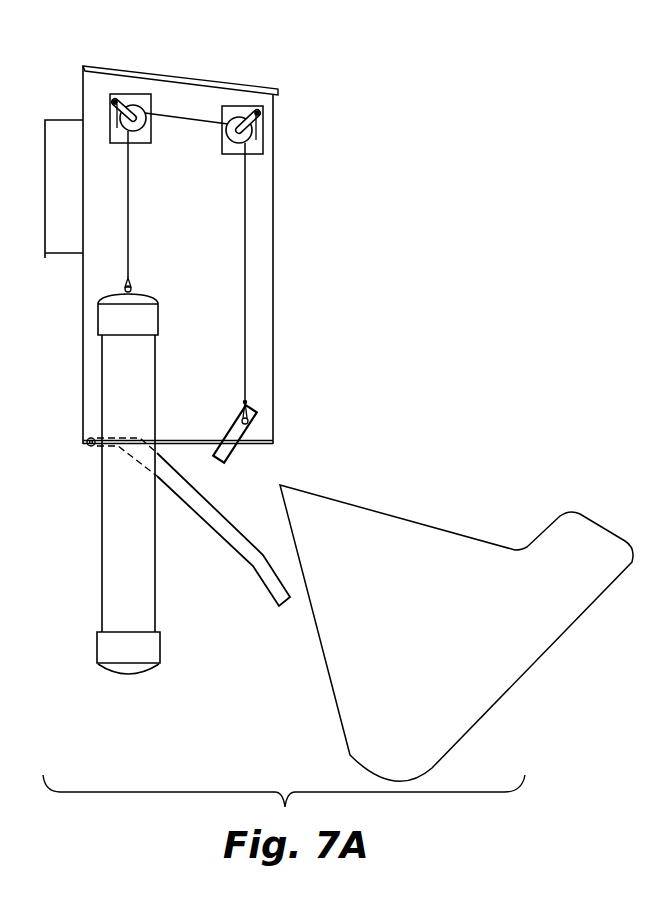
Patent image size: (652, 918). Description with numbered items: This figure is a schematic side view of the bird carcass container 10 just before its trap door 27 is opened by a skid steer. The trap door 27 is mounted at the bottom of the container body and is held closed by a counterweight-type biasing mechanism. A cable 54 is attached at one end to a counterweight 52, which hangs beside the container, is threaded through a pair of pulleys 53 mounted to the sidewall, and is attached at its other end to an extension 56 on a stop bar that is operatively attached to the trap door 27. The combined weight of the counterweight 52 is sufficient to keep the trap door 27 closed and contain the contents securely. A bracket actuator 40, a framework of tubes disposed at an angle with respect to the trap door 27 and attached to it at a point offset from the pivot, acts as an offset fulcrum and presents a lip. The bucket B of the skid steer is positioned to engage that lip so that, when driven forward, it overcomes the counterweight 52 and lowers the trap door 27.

The bird carcass container 10 is at (397, 128).
The trap door 27 is at (265, 445).
The pulleys 53 is at (221, 152).
The cable 54 is at (245, 297).
The extension 56 is at (253, 413).
The counterweight 52 is at (102, 588).
The bracket actuator 40 is at (220, 560).
The bucket B is at (517, 683).